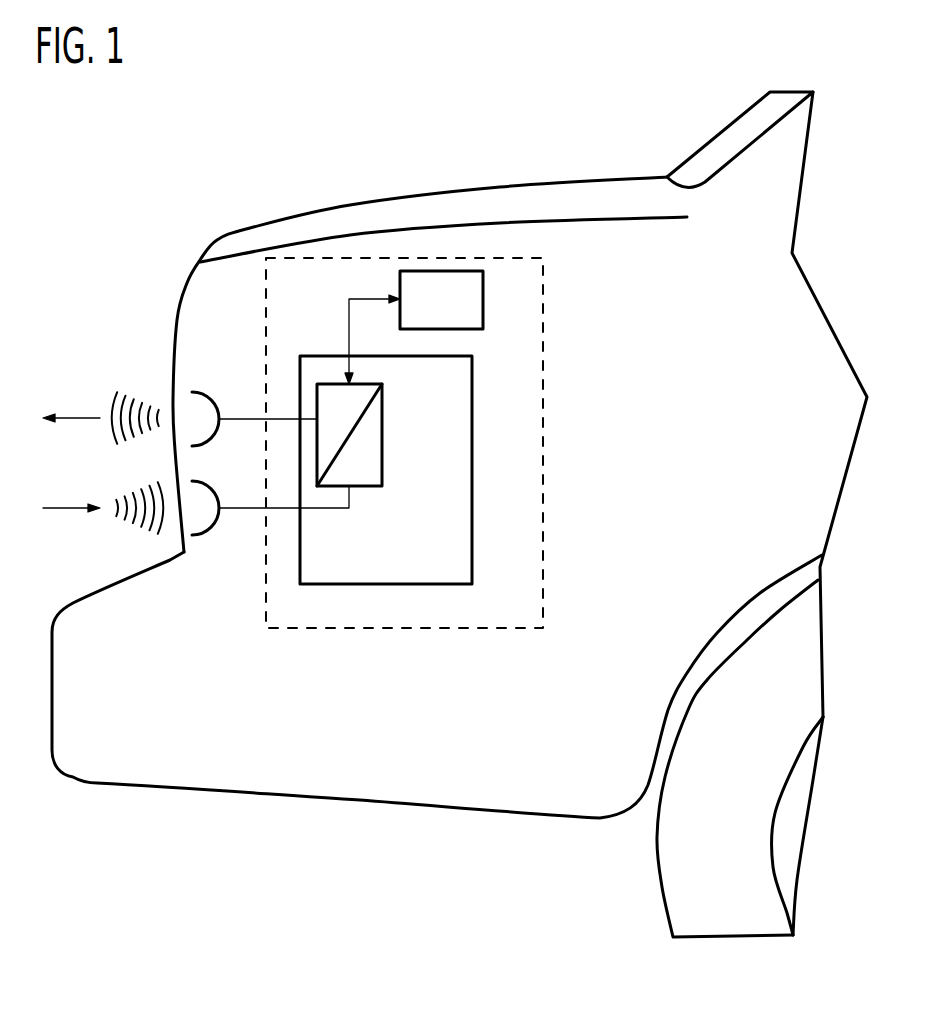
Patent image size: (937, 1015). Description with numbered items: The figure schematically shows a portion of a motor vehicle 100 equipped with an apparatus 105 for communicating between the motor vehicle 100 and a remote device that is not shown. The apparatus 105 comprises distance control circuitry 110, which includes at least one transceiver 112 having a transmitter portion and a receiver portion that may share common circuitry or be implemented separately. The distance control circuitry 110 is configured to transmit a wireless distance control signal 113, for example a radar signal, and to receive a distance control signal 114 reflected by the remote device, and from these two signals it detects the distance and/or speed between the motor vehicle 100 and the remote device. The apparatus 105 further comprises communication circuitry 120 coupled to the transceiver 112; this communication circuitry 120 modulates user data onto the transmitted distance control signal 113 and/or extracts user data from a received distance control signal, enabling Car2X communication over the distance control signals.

The motor vehicle 100 is at (538, 131).
The apparatus 105 is at (543, 430).
The distance control circuitry 110 is at (440, 546).
The transceiver 112 is at (382, 433).
The transmitted distance control signal 113 is at (128, 373).
The received distance control signal 114 is at (120, 538).
The communication circuitry 120 is at (462, 312).